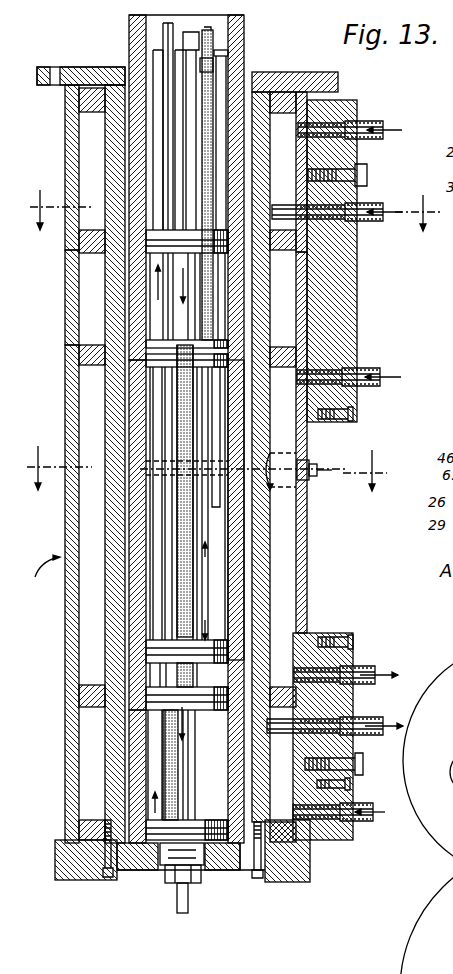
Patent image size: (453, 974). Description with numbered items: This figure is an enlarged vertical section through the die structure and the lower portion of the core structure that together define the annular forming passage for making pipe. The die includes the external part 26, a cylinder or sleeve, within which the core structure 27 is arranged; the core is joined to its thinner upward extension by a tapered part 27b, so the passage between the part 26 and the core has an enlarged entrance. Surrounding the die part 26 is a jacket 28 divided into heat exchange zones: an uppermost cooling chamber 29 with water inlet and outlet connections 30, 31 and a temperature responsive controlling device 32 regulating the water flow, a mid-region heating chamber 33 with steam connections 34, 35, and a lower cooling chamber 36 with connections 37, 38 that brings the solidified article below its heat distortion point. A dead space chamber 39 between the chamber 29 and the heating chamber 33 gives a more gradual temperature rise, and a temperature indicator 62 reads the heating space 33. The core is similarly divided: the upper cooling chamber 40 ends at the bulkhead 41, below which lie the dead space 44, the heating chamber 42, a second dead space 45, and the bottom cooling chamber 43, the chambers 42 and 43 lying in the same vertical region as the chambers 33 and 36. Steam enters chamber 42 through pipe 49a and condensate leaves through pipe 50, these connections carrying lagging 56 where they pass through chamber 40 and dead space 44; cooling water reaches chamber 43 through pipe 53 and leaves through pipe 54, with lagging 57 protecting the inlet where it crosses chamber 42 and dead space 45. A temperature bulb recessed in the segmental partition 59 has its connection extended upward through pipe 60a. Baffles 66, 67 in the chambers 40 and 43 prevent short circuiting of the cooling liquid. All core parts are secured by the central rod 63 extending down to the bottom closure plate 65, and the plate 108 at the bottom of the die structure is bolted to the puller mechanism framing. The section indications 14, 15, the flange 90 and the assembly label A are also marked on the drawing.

The section line 14- 14 is at (207, 459).
The section line 15- 15 is at (236, 201).
The external die part 26 is at (266, 545).
The core structure 27 is at (237, 571).
The tapered part of the core 27b is at (298, 76).
The jacket 28 is at (307, 599).
The upper cooling chamber 29 is at (90, 133).
The inlet connection 30 is at (372, 125).
The outlet connection 31 is at (373, 221).
The temperature responsive controlling device 32 is at (326, 234).
The heating chamber 33 is at (85, 373).
The inlet connection 34 is at (370, 372).
The outlet connection 35 is at (367, 667).
The lower cooling chamber 36 is at (275, 812).
The inlet connection 37 is at (363, 822).
The outlet connection 38 is at (363, 718).
The dead space chamber 39 is at (90, 285).
The upper core cooling chamber 40 is at (226, 38).
The bulkhead 41 is at (145, 219).
The core heating chamber 42 is at (150, 404).
The bottom core cooling chamber 43 is at (150, 764).
The core dead space 44 is at (150, 321).
The lower core dead space 45 is at (148, 677).
The steam pipe 49a is at (222, 28).
The condensate pipe 50 is at (230, 64).
The cooling water supply pipe 53 is at (180, 52).
The cooling water discharge pipe 54 is at (156, 64).
The lagging 56 is at (217, 153).
The lagging 57 is at (177, 499).
The segmental partition 59 is at (200, 513).
The pipe 60a is at (200, 58).
The temperature indicator 62 is at (140, 483).
The central rod 63 is at (162, 863).
The bottom closure plate 65 is at (238, 870).
The baffle 66 is at (168, 30).
The baffle 67 is at (160, 740).
The top flange 90 is at (338, 86).
The plate 108 is at (55, 866).
The assembly A is at (50, 597).